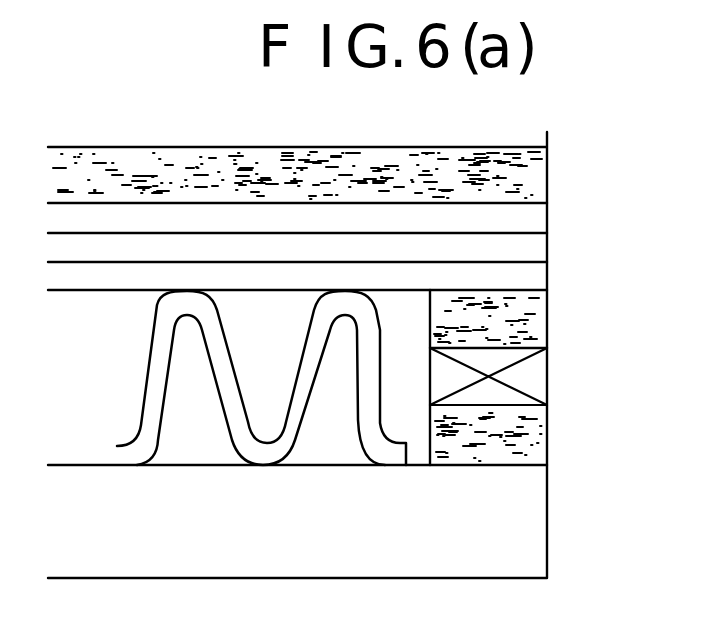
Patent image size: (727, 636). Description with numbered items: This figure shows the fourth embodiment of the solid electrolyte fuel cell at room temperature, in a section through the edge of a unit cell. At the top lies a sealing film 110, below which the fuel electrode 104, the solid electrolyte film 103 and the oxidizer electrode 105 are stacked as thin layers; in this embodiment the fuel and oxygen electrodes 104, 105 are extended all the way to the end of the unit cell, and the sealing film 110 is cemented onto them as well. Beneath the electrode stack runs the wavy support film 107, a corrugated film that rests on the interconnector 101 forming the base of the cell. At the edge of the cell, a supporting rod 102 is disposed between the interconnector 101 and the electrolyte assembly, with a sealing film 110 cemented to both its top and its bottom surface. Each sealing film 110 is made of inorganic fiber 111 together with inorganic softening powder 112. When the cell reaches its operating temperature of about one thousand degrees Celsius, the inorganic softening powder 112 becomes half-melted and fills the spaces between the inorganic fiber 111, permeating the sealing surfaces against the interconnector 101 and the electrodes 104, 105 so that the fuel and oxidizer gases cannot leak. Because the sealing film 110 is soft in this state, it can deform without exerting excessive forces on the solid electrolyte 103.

The interconnector 101 is at (542, 512).
The supporting rod 102 is at (533, 383).
The solid electrolyte film 103 is at (530, 247).
The fuel electrode 104 is at (530, 218).
The oxidizer electrode 105 is at (530, 277).
The wavy support film 107 is at (270, 450).
The sealing film 110 is at (523, 163).
The inorganic fiber 111 is at (515, 332).
The inorganic softening powder 112 is at (525, 342).